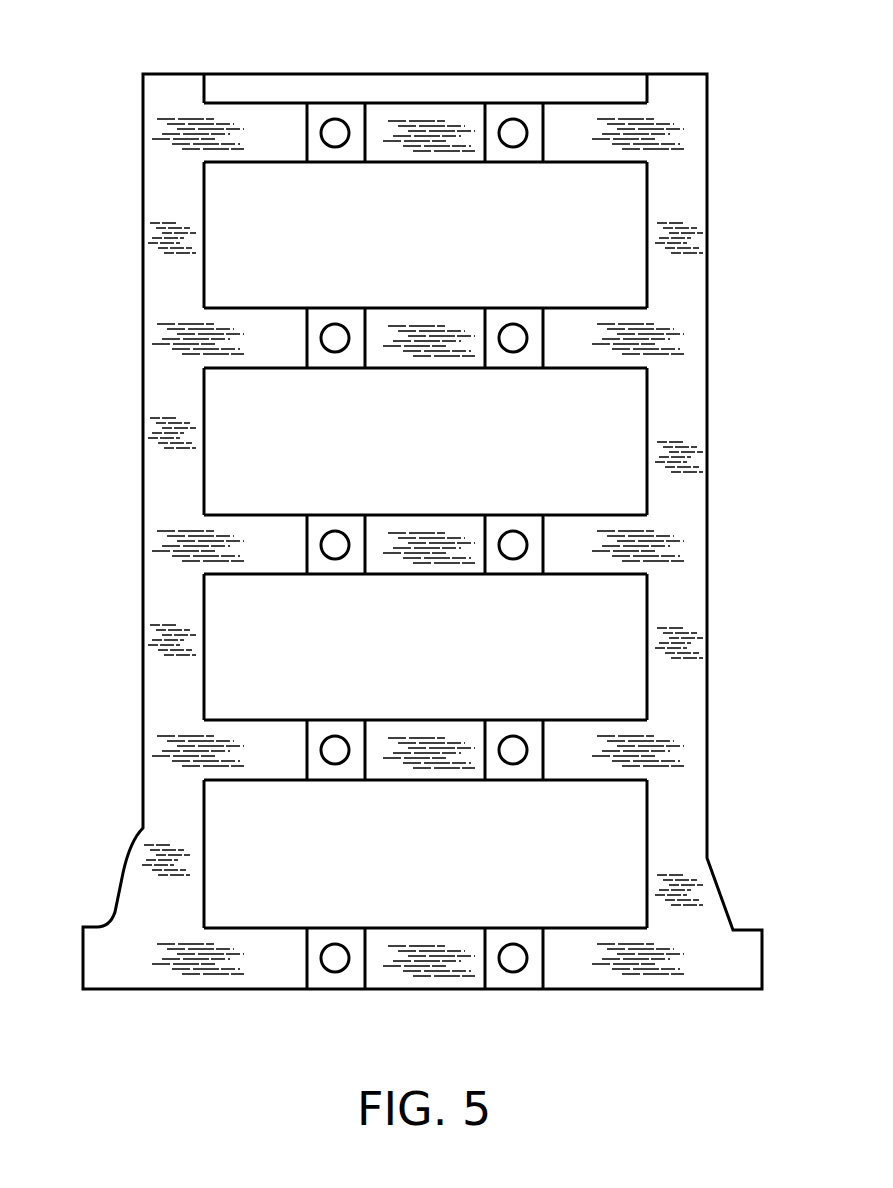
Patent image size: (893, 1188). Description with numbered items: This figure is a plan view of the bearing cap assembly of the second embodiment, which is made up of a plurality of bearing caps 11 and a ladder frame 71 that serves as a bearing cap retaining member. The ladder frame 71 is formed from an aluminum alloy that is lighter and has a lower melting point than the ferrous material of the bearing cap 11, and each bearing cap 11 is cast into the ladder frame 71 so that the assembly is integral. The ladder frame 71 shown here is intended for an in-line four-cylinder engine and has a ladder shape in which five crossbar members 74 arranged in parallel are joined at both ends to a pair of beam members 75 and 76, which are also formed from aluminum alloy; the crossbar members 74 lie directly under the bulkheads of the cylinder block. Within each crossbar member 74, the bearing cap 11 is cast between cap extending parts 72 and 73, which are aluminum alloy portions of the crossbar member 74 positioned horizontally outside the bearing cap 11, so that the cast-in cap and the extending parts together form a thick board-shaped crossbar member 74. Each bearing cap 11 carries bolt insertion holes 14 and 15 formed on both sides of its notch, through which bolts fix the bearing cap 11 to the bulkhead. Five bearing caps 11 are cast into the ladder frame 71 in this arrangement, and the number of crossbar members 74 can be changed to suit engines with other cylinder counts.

The bearing cap 11 is at (423, 120).
The bolt insertion hole 14 is at (345, 121).
The bolt insertion hole 15 is at (513, 123).
The ladder frame 71 is at (100, 537).
The cap extending part 72 is at (245, 133).
The cap extending part 73 is at (590, 133).
The crossbar member 74 is at (284, 101).
The beam member 75 is at (173, 460).
The beam member 76 is at (687, 442).